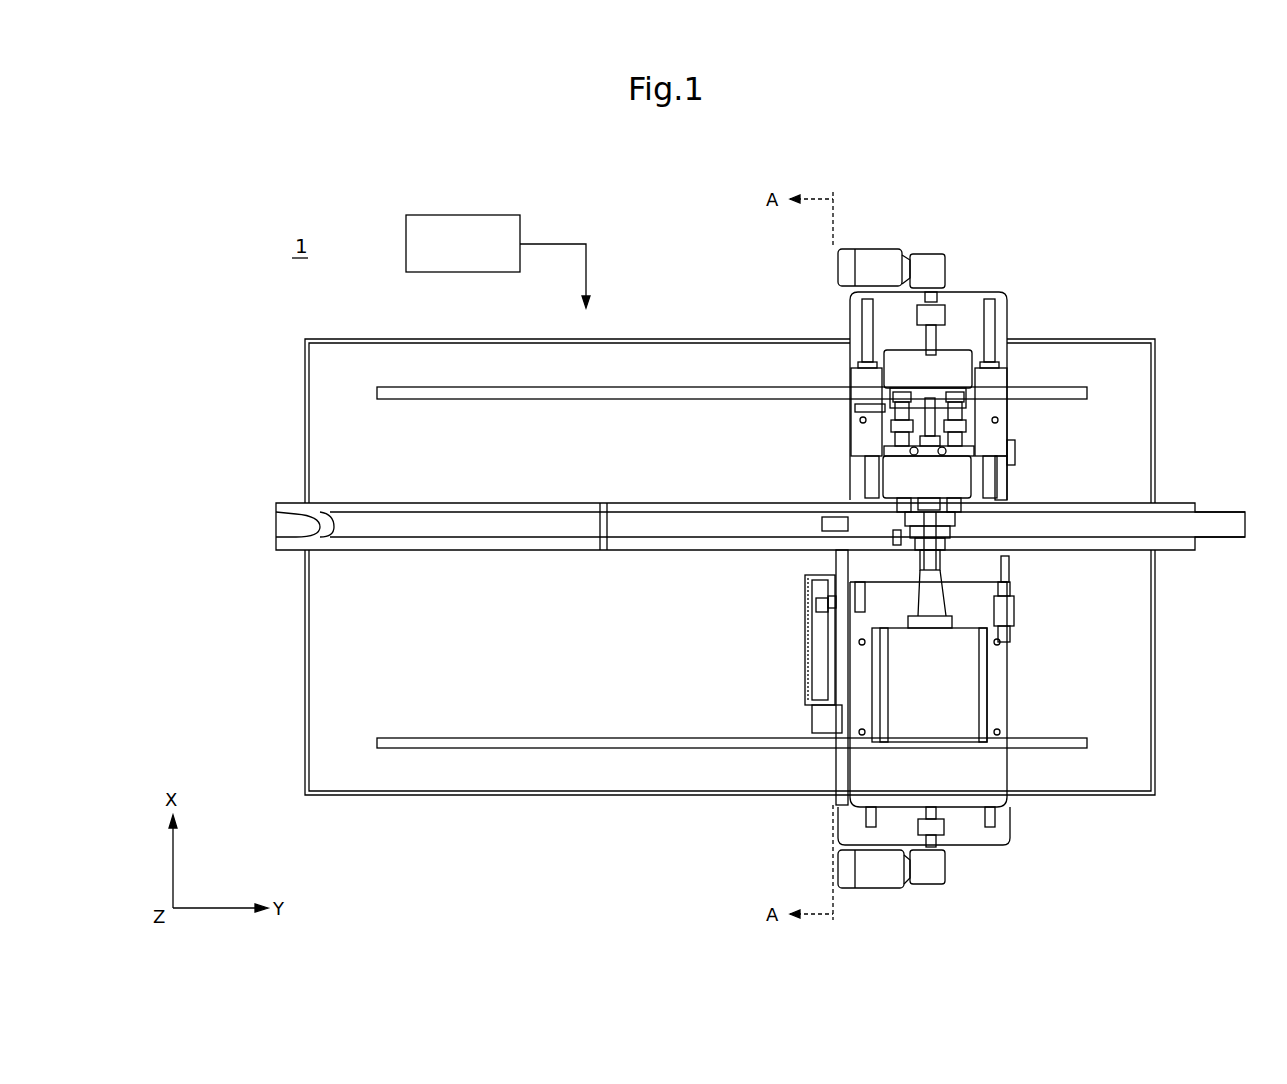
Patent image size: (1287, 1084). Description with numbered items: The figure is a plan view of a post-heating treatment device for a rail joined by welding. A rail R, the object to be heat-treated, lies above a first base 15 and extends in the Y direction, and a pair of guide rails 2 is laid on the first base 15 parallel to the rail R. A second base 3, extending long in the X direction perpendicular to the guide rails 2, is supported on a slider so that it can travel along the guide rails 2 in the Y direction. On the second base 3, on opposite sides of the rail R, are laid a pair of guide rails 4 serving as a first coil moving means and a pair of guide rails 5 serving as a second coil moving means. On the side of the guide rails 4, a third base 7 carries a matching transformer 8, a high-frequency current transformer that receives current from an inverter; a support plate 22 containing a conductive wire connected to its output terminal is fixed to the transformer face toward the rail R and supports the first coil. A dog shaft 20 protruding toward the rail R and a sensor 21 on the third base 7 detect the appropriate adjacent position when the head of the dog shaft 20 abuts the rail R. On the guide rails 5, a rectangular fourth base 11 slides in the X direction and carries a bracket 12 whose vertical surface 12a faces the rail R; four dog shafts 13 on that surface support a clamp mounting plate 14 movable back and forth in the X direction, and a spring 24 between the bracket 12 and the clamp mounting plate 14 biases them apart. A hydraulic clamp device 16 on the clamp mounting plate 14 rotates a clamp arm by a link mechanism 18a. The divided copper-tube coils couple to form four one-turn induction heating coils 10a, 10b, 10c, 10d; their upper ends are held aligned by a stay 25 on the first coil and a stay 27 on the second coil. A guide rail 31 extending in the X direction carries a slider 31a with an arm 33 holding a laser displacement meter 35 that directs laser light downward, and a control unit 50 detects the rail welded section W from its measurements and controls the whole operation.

The guide rails 2 is at (383, 387).
The second base 3 is at (1010, 292).
The guide rails 4 is at (866, 815).
The guide rails 5 is at (866, 320).
The third base 7 is at (992, 776).
The matching transformer 8 is at (960, 712).
The one-turn induction heating coil 10a is at (935, 560).
The one-turn induction heating coil 10b is at (958, 550).
The one-turn induction heating coil 10c is at (937, 570).
The one-turn induction heating coil 10d is at (1005, 558).
The fourth base 11 is at (1010, 445).
The bracket 12 is at (990, 392).
The vertical surface 12a is at (855, 406).
The dog shafts 13 is at (860, 430).
The clamp mounting plate 14 is at (1012, 455).
The first base 15 is at (1150, 339).
The hydraulic clamp device 16 is at (905, 482).
The link mechanism 18a is at (905, 527).
The dog shaft 20 is at (1008, 580).
The sensor 21 is at (1012, 630).
The support plate 22 is at (926, 613).
The spring 24 is at (932, 418).
The stay 25 is at (900, 540).
The stay 27 is at (1000, 493).
The guide rail 31 is at (820, 668).
The slider 31a is at (808, 634).
The arm 33 is at (812, 592).
The laser displacement meter 35 is at (826, 520).
The control unit 50 is at (478, 215).
The rail R is at (394, 503).
The rail welded section W is at (604, 503).